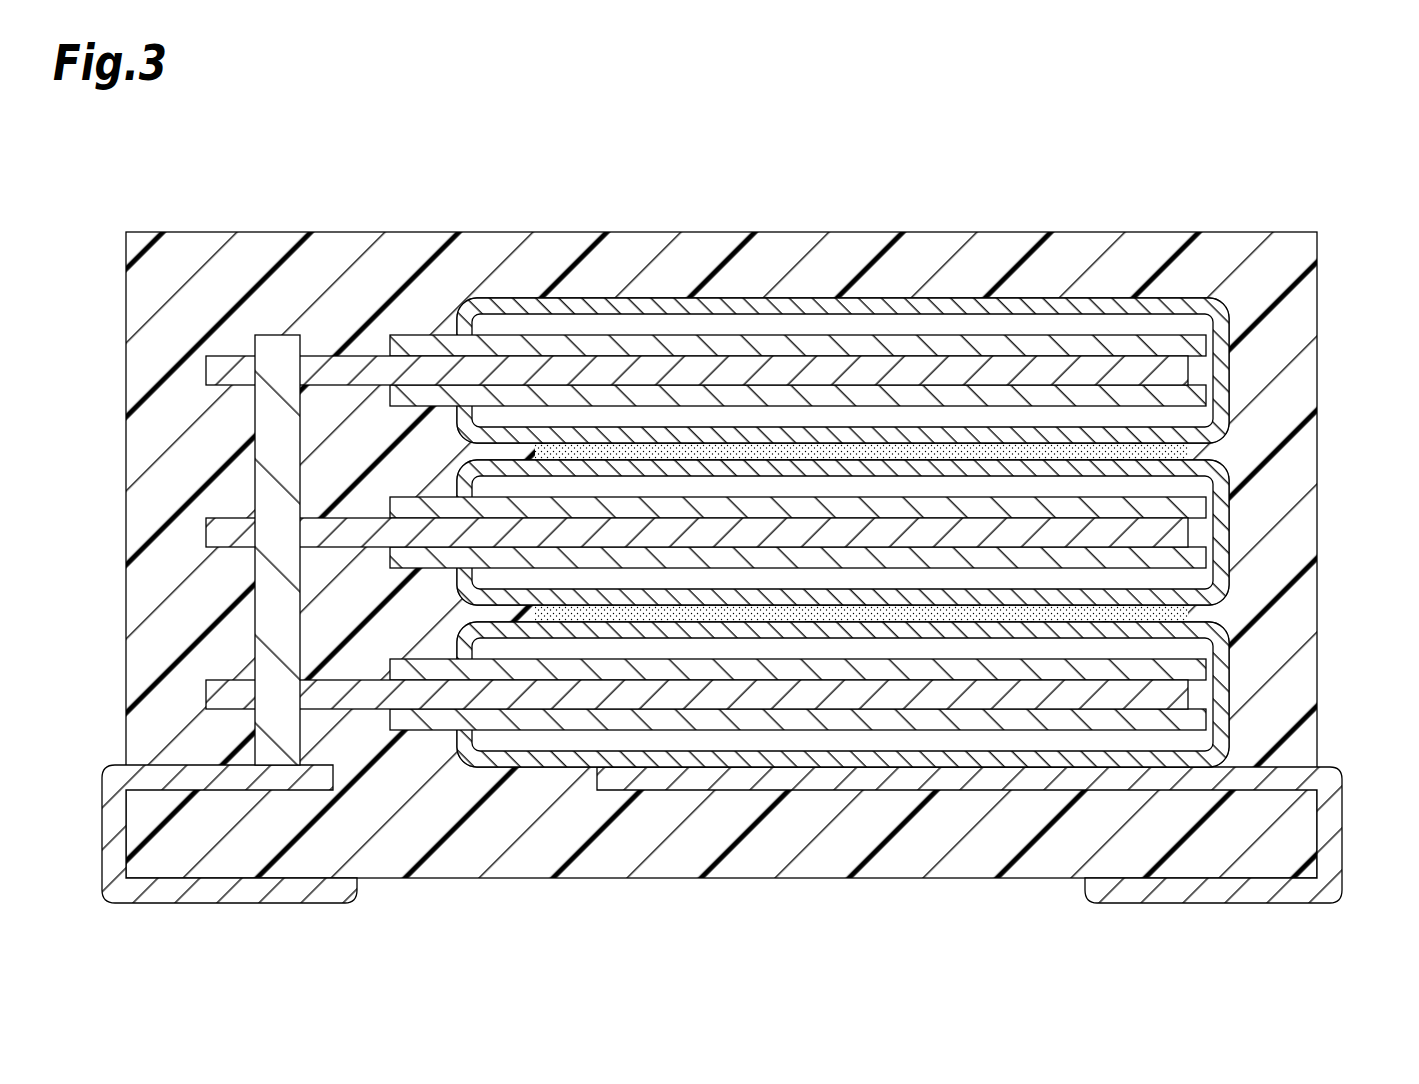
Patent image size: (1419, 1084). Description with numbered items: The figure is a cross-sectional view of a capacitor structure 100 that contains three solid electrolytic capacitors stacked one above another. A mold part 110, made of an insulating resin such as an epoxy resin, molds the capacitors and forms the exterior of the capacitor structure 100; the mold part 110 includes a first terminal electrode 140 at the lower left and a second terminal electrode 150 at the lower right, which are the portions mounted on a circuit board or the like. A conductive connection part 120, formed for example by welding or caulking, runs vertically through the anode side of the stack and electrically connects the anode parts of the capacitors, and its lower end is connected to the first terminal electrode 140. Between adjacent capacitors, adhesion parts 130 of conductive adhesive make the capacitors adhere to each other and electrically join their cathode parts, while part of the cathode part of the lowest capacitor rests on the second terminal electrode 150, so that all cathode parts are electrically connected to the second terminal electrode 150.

The capacitor structure 100 is at (734, 535).
The mold part 110 is at (745, 862).
The connection part 120 is at (273, 488).
The adhesion part 130 is at (1190, 451).
The first terminal electrode 140 is at (207, 893).
The second terminal electrode 150 is at (1247, 893).